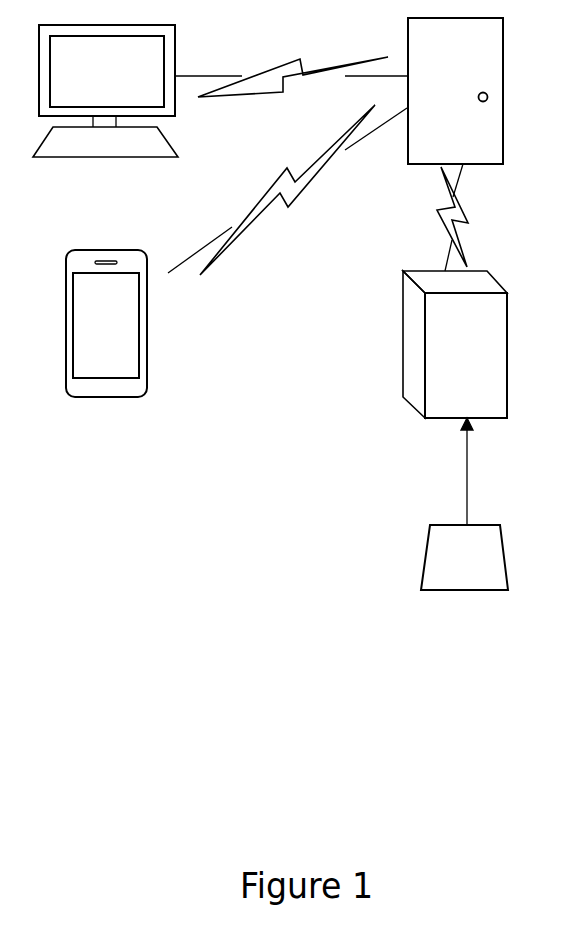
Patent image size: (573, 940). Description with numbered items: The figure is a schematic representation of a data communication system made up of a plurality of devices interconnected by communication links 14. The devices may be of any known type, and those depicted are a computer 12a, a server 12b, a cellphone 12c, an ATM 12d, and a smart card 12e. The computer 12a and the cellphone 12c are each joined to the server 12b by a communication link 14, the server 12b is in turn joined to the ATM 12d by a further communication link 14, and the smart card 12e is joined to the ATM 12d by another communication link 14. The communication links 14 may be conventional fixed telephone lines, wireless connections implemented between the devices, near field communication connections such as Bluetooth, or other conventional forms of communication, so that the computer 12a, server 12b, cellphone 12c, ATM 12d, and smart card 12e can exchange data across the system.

The computer 12a is at (105, 91).
The server 12b is at (455, 91).
The cellphone 12c is at (106, 323).
The ATM 12d is at (455, 344).
The smart card 12e is at (464, 557).
The communication links 14 is at (338, 271).